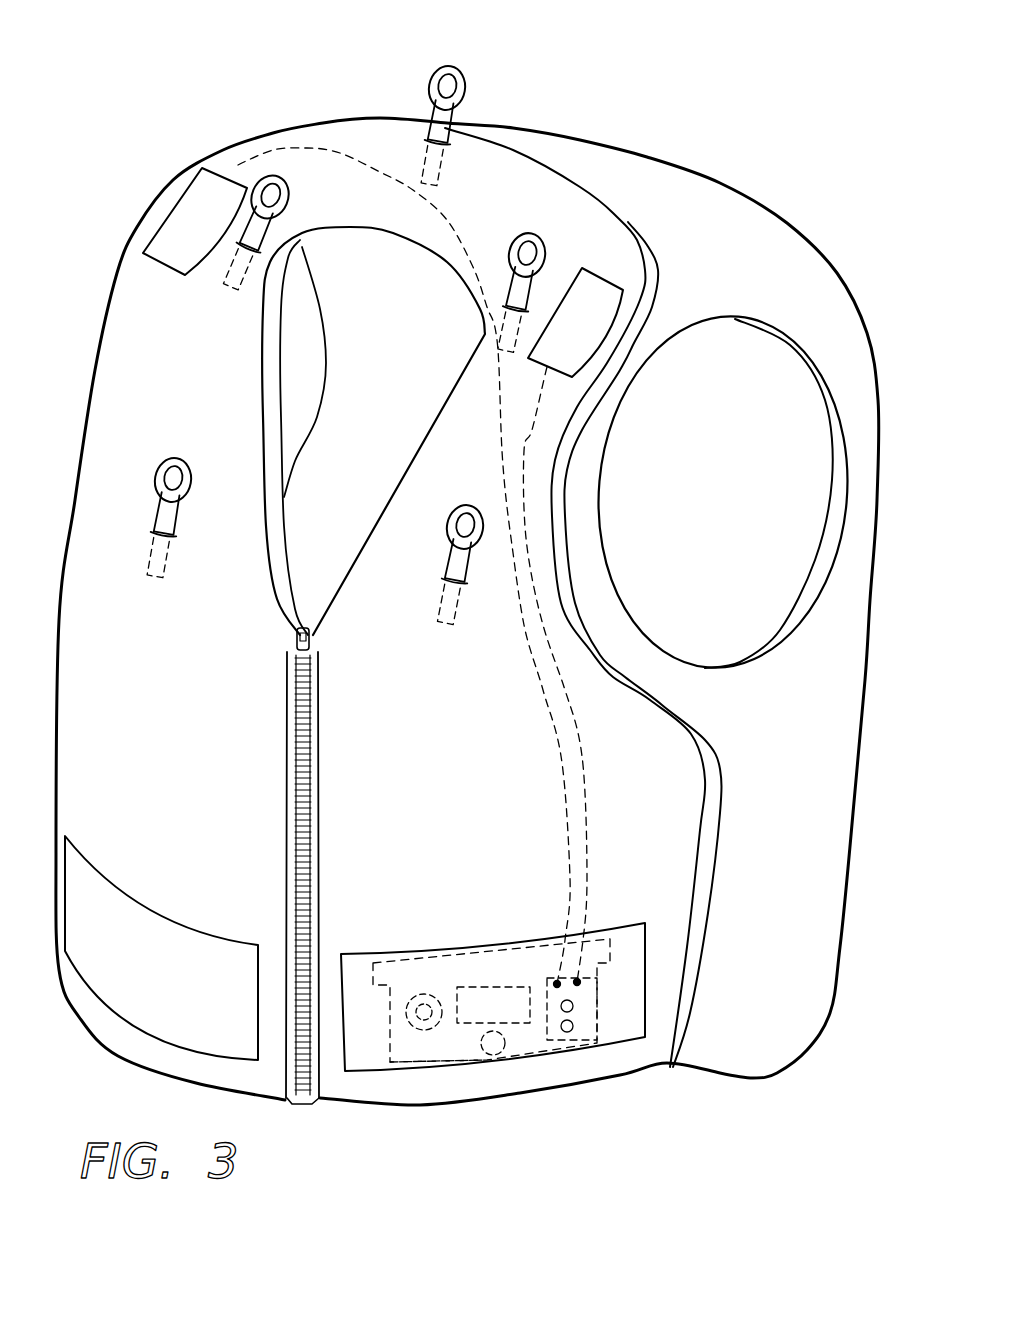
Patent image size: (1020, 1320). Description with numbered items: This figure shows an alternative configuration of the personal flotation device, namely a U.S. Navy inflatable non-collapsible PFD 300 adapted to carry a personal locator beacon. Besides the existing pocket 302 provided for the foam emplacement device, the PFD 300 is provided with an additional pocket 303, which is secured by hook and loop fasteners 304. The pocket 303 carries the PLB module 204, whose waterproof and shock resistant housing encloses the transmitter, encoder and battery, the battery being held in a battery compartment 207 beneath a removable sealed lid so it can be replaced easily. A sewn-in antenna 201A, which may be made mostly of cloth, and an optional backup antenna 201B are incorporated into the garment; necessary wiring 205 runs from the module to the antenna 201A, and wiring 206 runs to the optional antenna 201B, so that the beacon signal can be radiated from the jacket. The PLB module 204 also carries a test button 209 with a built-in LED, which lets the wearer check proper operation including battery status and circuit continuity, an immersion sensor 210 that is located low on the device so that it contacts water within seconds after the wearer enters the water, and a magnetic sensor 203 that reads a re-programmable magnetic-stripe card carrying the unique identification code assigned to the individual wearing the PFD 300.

The inflatable non-collapsible PFD 300 is at (100, 203).
The antenna 201A is at (577, 290).
The backup antenna 201B is at (190, 187).
The magnetic sensor 203 is at (489, 987).
The PLB module 204 is at (438, 1062).
The wiring 205 is at (582, 810).
The wiring 206 is at (561, 751).
The battery compartment 207 is at (575, 1007).
The test button 209 is at (408, 1013).
The immersion sensor 210 is at (505, 1045).
The pocket 302 is at (190, 927).
The pocket 303 is at (348, 953).
The hook and loop fasteners 304 is at (420, 963).